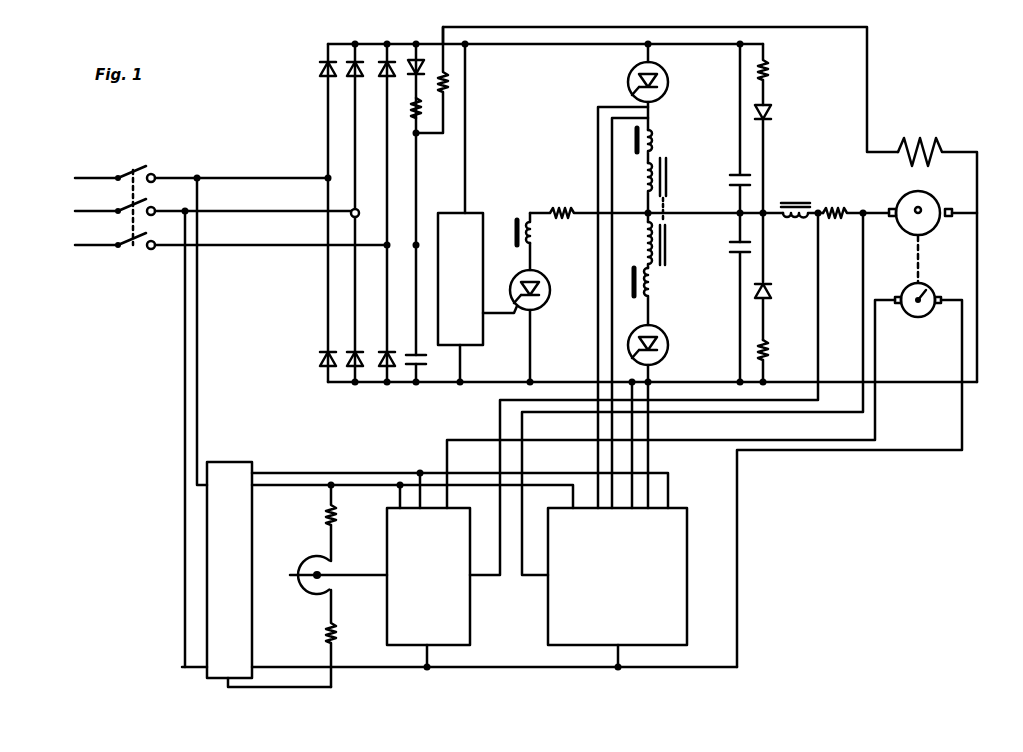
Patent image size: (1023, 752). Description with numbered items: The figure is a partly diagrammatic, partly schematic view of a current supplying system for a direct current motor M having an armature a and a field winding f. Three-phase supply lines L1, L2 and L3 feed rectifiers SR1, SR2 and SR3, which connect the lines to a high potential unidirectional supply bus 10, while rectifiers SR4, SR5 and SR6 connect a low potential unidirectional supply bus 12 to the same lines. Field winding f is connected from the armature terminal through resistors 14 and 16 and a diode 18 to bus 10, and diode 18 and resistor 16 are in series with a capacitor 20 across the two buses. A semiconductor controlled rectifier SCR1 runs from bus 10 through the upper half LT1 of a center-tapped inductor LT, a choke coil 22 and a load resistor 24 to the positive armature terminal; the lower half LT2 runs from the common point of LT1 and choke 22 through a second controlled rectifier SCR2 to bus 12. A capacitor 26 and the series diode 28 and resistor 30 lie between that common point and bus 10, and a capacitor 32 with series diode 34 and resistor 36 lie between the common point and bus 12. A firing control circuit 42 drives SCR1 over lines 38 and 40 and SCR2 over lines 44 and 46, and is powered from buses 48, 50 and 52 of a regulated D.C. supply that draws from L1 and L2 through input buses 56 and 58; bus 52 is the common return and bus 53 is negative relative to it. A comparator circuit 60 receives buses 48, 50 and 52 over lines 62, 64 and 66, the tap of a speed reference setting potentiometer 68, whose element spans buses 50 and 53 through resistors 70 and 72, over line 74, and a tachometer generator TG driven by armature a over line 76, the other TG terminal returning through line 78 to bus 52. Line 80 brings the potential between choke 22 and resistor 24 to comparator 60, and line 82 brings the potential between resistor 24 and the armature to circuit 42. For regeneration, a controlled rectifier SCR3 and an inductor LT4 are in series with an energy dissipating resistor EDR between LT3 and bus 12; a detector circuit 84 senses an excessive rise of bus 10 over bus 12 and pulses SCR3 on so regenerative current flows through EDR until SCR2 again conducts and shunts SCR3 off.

The high potential unidirectional supply bus 10 is at (540, 50).
The low potential unidirectional supply bus 12 is at (516, 381).
The resistor 14 is at (439, 80).
The resistor 16 is at (410, 118).
The diode 18 is at (408, 213).
The capacitor 20 is at (414, 348).
The choke coil 22 is at (806, 222).
The load resistor 24 is at (852, 201).
The capacitor 26 is at (735, 186).
The diode 28 is at (771, 113).
The resistor 30 is at (770, 72).
The capacitor 32 is at (724, 240).
The diode 34 is at (772, 290).
The resistor 36 is at (772, 352).
The line 38 is at (598, 128).
The line 40 is at (612, 158).
The firing control circuit 42 is at (617, 587).
The line 44 is at (634, 428).
The line 46 is at (650, 460).
The high potential bus 48 is at (335, 473).
The intermediate potential bus 50 is at (300, 488).
The common return bus 52 is at (318, 650).
The negative potential bus 53 is at (336, 687).
The input bus 56 is at (182, 329).
The input bus 58 is at (198, 352).
The comparator circuit 60 is at (428, 587).
The line 62 is at (420, 472).
The line 64 is at (400, 497).
The line 66 is at (433, 663).
The speed reference setting potentiometer 68 is at (312, 557).
The resistor 70 is at (337, 514).
The resistor 72 is at (336, 633).
The line 74 is at (378, 575).
The line 76 is at (875, 404).
The line 78 is at (962, 404).
The line 80 is at (832, 304).
The line 82 is at (863, 266).
The detector circuit 84 is at (477, 213).
The rectifier SR1 is at (322, 78).
The rectifier SR2 is at (352, 80).
The rectifier SR3 is at (382, 80).
The rectifier SR4 is at (320, 355).
The rectifier SR5 is at (350, 352).
The rectifier SR6 is at (380, 352).
The semiconductor controlled rectifier SCR1 is at (630, 72).
The semiconductor controlled rectifier SCR2 is at (668, 350).
The semiconductor controlled rectifier SCR3 is at (534, 318).
The center-tapped inductor LT is at (643, 190).
The upper half of inductor LT1 is at (657, 147).
The lower half of inductor LT2 is at (657, 286).
The inductor winding LT3 is at (640, 241).
The inductor LT4 is at (536, 236).
The energy dissipating resistor EDR is at (572, 190).
The motor M is at (926, 204).
The armature a is at (940, 196).
The field winding f is at (944, 148).
The tachometer generator TG is at (919, 320).
The phase supply line L1 is at (186, 177).
The phase supply line L2 is at (200, 210).
The phase supply line L3 is at (216, 213).